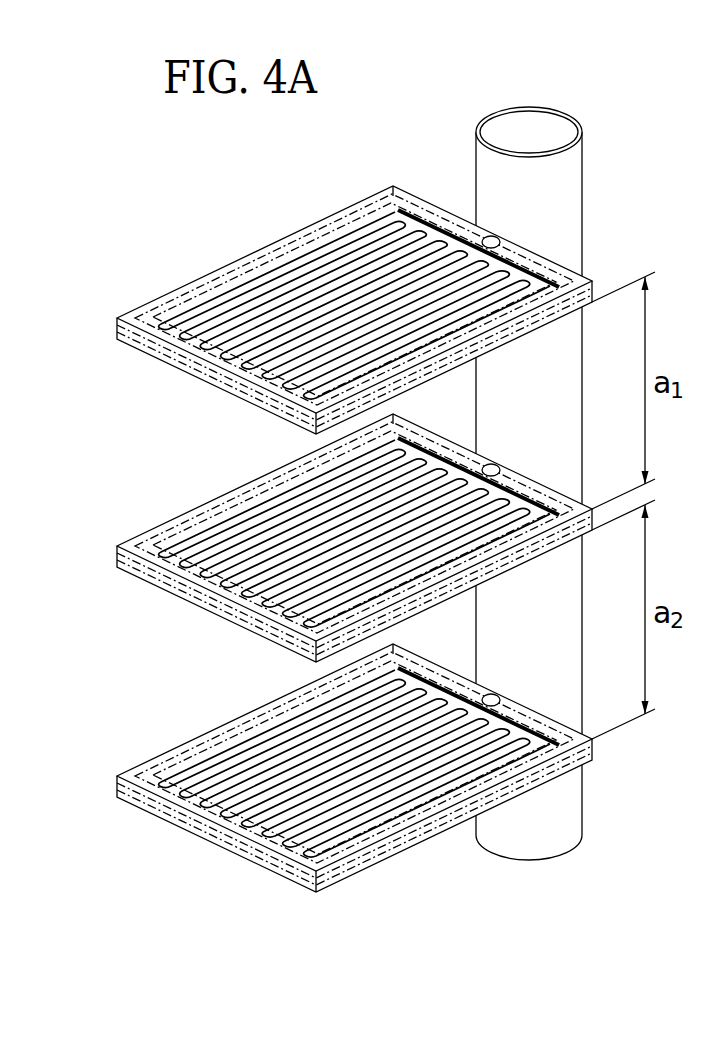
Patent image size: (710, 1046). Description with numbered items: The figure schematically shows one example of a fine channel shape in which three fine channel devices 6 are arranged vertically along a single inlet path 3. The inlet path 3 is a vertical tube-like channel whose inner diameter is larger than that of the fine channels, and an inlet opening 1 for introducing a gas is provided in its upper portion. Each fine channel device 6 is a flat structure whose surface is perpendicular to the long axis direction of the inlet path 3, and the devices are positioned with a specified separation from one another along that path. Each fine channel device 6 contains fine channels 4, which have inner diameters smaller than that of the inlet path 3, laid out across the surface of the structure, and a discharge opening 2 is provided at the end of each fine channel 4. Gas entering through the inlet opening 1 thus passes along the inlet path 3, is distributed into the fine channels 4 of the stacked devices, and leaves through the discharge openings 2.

The inlet opening 1 is at (528, 133).
The discharge opening 2 is at (157, 353).
The inlet path 3 is at (562, 822).
The fine channels 4 is at (346, 237).
The fine channel device 6 is at (339, 296).